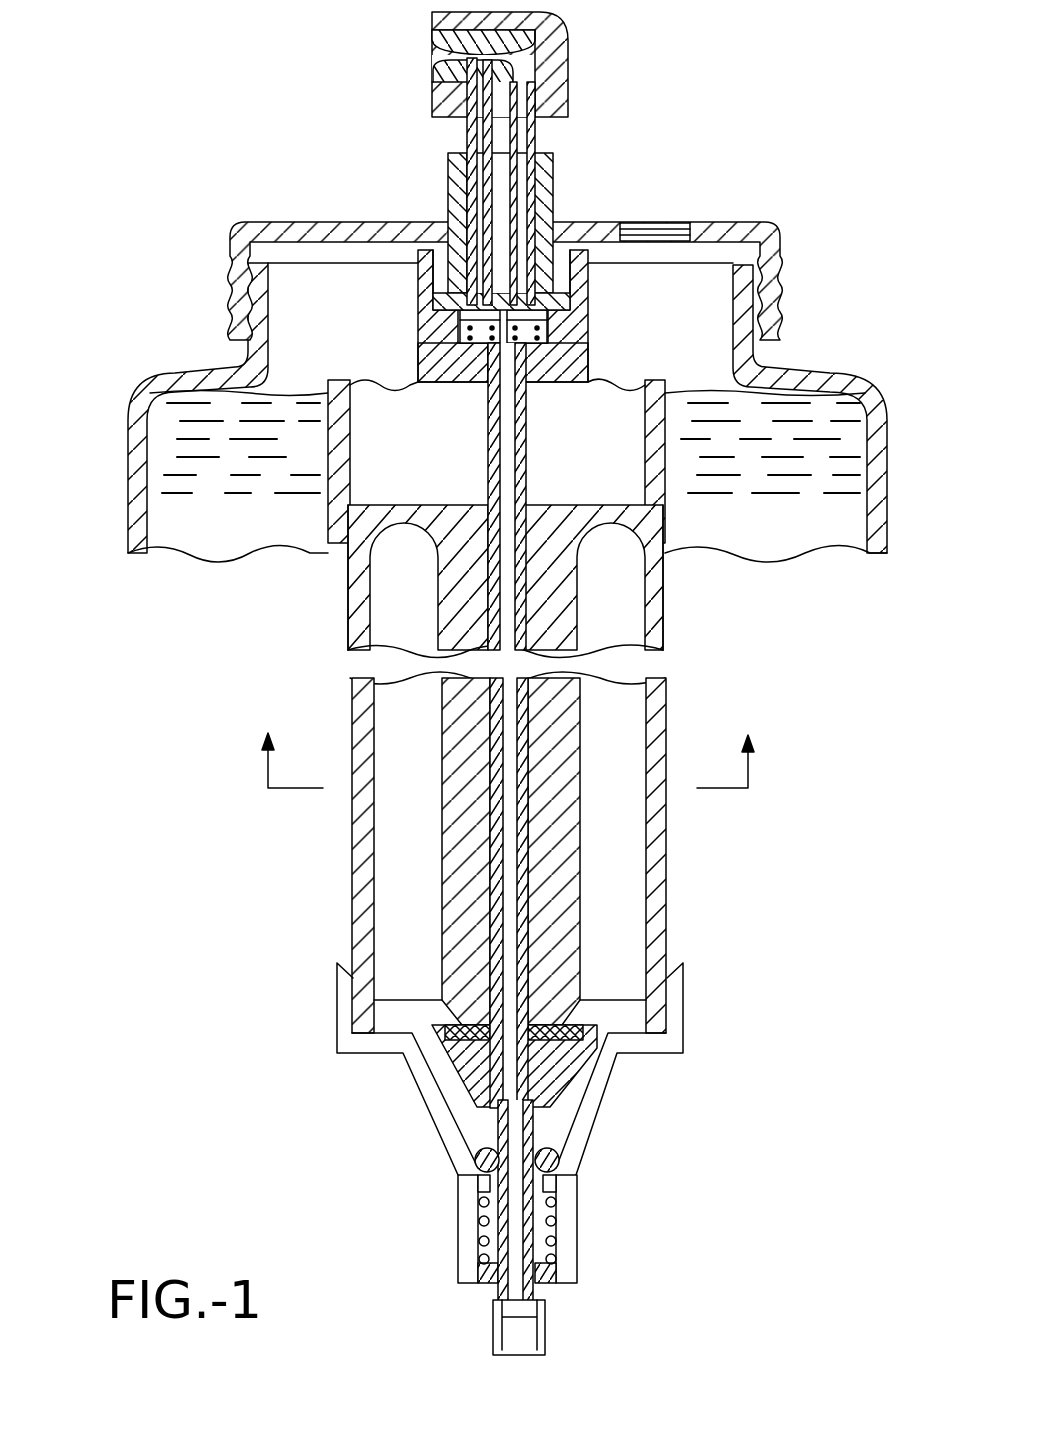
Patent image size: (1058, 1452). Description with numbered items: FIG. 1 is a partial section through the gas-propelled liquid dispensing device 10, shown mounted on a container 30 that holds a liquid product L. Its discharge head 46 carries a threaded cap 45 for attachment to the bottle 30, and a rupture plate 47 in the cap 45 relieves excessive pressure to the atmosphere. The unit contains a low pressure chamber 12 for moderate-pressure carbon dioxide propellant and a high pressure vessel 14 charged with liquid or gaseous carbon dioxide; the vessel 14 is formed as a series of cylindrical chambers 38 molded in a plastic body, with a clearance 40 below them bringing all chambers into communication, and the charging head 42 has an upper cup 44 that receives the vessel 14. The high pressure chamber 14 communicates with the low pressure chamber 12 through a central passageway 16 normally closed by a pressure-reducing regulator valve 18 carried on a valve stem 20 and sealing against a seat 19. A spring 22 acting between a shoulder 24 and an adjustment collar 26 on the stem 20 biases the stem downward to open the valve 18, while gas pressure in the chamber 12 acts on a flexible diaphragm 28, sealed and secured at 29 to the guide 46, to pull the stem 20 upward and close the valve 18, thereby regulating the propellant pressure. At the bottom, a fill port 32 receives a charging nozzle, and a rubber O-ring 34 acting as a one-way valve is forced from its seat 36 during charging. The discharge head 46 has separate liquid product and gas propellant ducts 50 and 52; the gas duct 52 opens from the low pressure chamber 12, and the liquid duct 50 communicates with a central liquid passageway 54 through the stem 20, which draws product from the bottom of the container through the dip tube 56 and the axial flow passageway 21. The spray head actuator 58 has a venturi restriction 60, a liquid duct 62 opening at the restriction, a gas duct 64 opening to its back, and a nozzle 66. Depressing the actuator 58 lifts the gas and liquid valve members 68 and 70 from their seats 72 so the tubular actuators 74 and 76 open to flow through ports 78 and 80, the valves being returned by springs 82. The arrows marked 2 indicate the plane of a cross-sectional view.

The gas-propelled liquid dispensing device 10 is at (786, 791).
The low pressure chamber 12 is at (640, 470).
The high pressure vessel 14 is at (662, 628).
The central passageway 16 is at (528, 590).
The pressure-reducing regulator valve 18 is at (640, 1000).
The seat 19 is at (450, 1025).
The valve stem 20 is at (525, 858).
The axial flow passageway 21 is at (515, 763).
The spring 22 is at (558, 1202).
The shoulder 24 is at (552, 1182).
The adjustment collar 26 is at (548, 1278).
The flexible diaphragm 28 is at (645, 382).
The diaphragm seal 29 is at (418, 385).
The container 30 is at (178, 388).
The fill port 32 is at (468, 1280).
The rubber O-ring 34 is at (578, 1168).
The seat 36 is at (478, 1178).
The cylindrical chambers 38 is at (640, 905).
The clearance 40 is at (640, 1012).
The charging head 42 is at (572, 1243).
The upper cup 44 is at (345, 1005).
The threaded cap 45 is at (770, 222).
The discharge head 46 is at (560, 325).
The rupture plate 47 is at (680, 222).
The liquid product duct 50 is at (420, 350).
The gas propellant duct 52 is at (572, 345).
The central liquid passageway 54 is at (512, 465).
The dip tube 56 is at (545, 1340).
The spray head actuator 58 is at (565, 10).
The venturi restriction 60 is at (535, 47).
The liquid duct 62 is at (435, 82).
The gas duct 64 is at (565, 80).
The nozzle 66 is at (425, 53).
The gas valve member 68 is at (588, 302).
The liquid valve member 70 is at (420, 312).
The seats 72 is at (590, 256).
The tubular actuator 74 is at (536, 140).
The tubular actuator 76 is at (467, 142).
The port 78 is at (572, 222).
The port 80 is at (465, 240).
The springs 82 is at (550, 340).
The liquid product L is at (775, 405).
The section line 2 is at (508, 744).